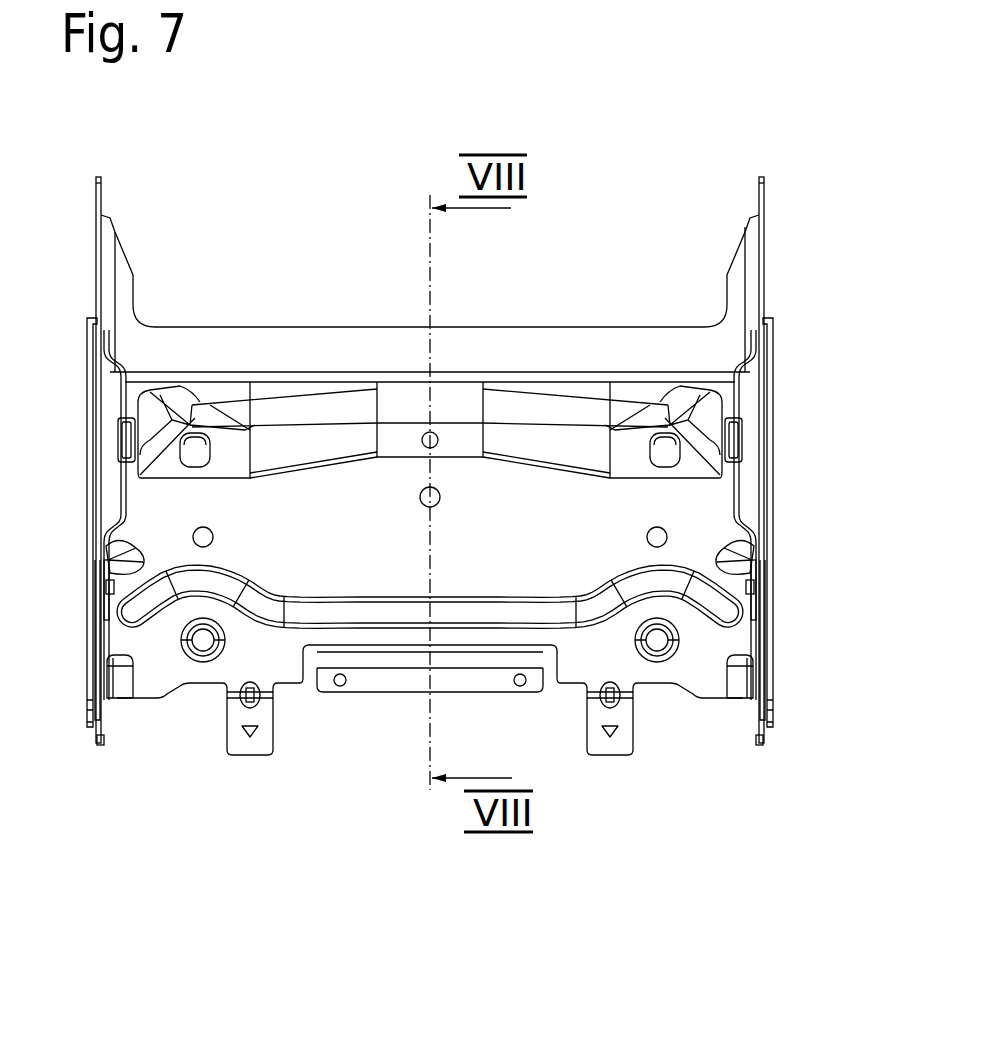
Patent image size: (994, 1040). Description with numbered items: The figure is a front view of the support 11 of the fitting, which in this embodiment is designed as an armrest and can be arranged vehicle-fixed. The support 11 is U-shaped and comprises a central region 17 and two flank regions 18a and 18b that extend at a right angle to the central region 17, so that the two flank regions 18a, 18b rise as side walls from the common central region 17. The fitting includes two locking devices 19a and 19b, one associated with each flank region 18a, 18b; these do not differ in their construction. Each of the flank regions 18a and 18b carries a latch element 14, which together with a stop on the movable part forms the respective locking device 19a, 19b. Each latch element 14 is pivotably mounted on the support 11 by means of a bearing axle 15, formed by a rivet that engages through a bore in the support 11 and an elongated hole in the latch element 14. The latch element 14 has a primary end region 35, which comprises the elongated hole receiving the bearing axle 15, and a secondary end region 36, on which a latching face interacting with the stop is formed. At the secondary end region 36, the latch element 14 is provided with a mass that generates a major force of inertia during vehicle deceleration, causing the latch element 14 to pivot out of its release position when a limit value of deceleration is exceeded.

The support 11 is at (752, 243).
The flank region 18a is at (145, 293).
The flank region 18b is at (718, 291).
The primary end region 35 is at (99, 560).
The bearing axle 15 is at (79, 589).
The locking device 19a is at (113, 703).
The locking device 19b is at (739, 707).
The latch element 14 is at (102, 746).
The secondary end region 36 is at (97, 748).
The central region 17 is at (371, 652).